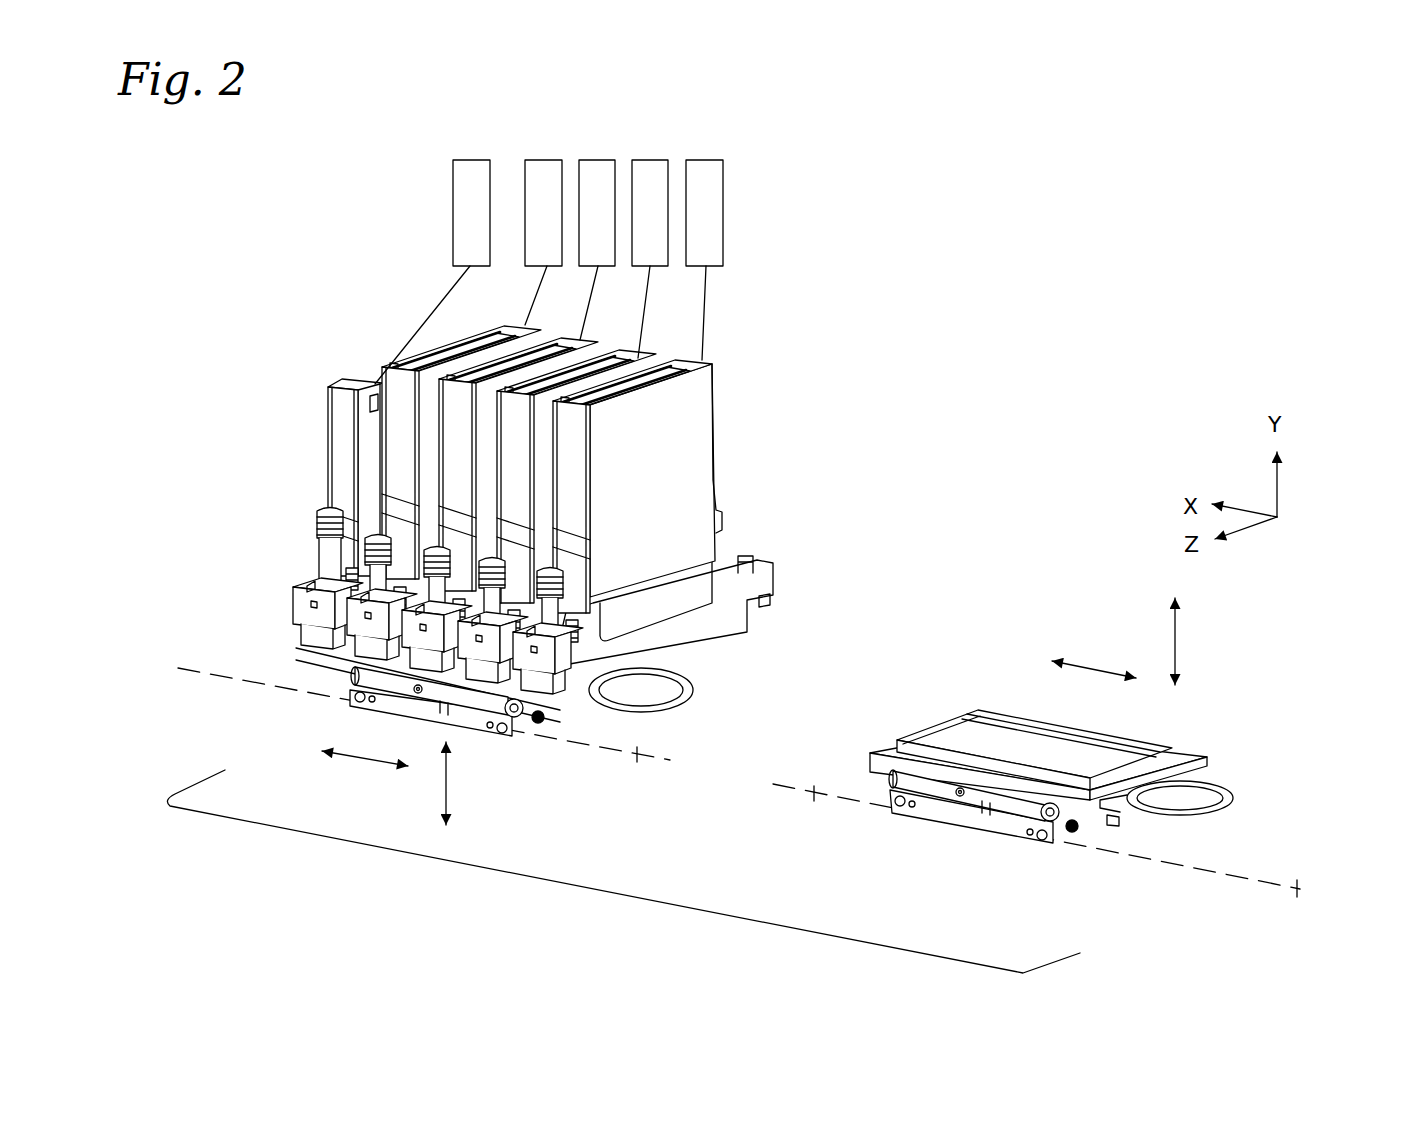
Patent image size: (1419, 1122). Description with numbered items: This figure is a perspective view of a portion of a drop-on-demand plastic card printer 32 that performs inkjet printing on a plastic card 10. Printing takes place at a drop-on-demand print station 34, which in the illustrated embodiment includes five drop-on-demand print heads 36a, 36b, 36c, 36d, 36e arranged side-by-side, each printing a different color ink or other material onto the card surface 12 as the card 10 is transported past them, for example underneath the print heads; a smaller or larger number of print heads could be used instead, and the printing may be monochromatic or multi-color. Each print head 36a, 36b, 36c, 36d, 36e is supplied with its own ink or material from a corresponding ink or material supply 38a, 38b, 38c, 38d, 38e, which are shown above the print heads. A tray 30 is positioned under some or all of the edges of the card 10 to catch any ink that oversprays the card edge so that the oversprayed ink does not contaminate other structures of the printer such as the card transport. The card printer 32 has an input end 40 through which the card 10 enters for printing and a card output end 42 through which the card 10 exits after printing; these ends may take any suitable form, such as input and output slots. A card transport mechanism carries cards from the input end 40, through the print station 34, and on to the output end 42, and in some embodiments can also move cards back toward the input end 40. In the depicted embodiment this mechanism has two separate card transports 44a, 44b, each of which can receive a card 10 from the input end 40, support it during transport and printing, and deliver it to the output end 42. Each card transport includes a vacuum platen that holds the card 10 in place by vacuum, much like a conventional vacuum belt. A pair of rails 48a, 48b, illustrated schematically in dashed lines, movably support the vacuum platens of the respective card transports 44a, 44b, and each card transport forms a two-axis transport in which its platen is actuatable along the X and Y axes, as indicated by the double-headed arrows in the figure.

The card 10 is at (1081, 734).
The card surface 12 is at (993, 730).
The tray 30 is at (1206, 758).
The plastic card printer 32 is at (600, 892).
The drop-on-demand print station 34 is at (742, 657).
The drop-on-demand print head 36a is at (716, 396).
The drop-on-demand print head 36b is at (512, 424).
The drop-on-demand print head 36c is at (455, 398).
The drop-on-demand print head 36d is at (523, 325).
The drop-on-demand print head 36e is at (337, 382).
The ink or material supply 38a is at (710, 160).
The ink or material supply 38b is at (652, 160).
The ink or material supply 38c is at (590, 160).
The ink or material supply 38d is at (535, 160).
The ink or material supply 38e is at (463, 160).
The input end 40 is at (1299, 888).
The card output end 42 is at (231, 661).
The card transport 44a is at (988, 838).
The card transport 44b is at (470, 740).
The rail 48a is at (814, 796).
The rail 48b is at (637, 760).